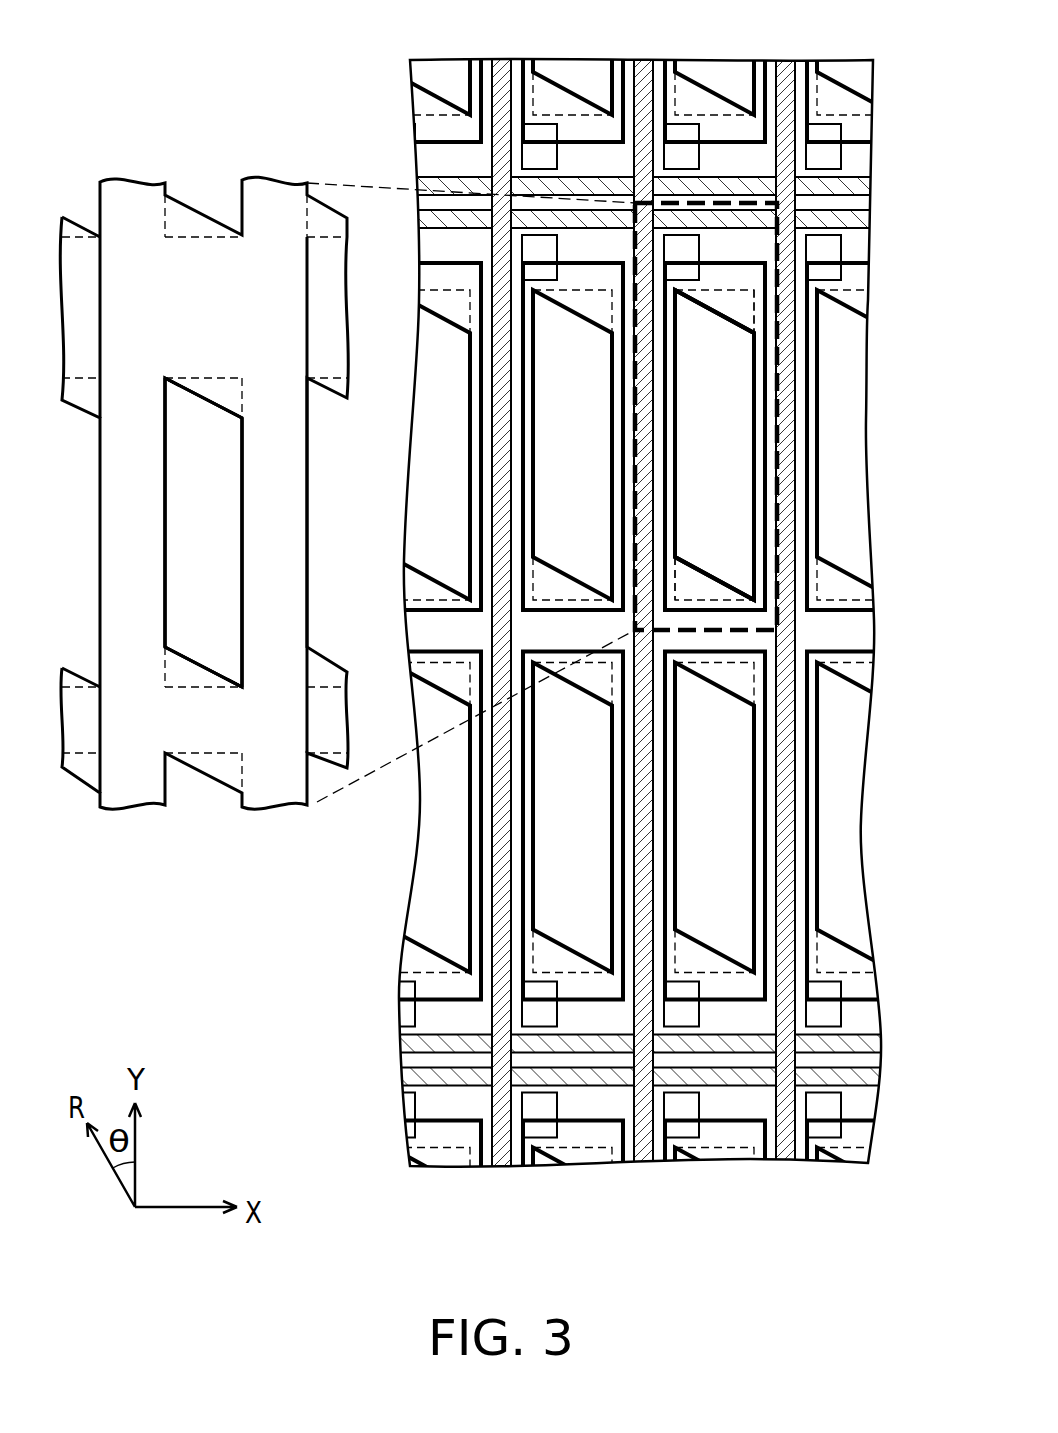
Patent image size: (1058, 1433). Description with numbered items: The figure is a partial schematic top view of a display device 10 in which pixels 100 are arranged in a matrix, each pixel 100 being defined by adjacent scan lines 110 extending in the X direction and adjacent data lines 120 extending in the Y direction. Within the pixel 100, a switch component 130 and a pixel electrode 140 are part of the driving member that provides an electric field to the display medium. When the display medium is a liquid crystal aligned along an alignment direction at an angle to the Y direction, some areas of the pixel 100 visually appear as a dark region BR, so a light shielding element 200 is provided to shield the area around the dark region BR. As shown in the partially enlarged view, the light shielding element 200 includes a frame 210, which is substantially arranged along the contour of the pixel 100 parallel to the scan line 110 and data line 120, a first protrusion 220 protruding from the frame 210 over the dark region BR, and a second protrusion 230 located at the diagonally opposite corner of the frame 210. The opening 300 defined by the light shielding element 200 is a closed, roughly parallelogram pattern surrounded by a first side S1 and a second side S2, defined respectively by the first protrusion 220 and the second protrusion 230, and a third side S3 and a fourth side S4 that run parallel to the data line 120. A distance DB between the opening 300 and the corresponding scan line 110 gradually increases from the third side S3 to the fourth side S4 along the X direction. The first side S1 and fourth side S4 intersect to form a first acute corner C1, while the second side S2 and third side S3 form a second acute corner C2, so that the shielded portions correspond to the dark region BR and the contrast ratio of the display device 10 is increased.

The display device 10 is at (666, 716).
The pixel 100 is at (777, 433).
The scan line 110 is at (852, 220).
The data line 120 is at (643, 85).
The switch component 130 is at (693, 293).
The pixel electrode 140 is at (730, 610).
The opening 300 is at (767, 496).
The dark region BR is at (730, 305).
The distance DB is at (716, 228).
The light shielding element 200 is at (212, 532).
The frame 210 is at (297, 498).
The first protrusion 220 is at (185, 675).
The second protrusion 230 is at (228, 394).
The first acute corner C1 is at (225, 665).
The second acute corner C2 is at (182, 406).
The first side S1 is at (198, 657).
The second side S2 is at (222, 412).
The third side S3 is at (165, 531).
The fourth side S4 is at (242, 582).